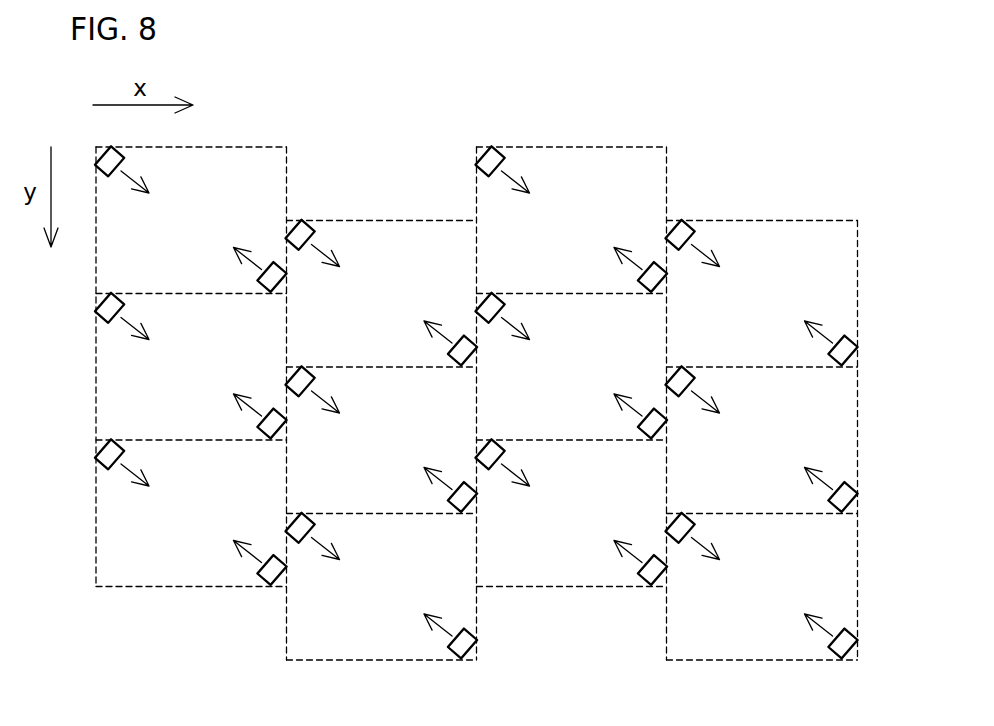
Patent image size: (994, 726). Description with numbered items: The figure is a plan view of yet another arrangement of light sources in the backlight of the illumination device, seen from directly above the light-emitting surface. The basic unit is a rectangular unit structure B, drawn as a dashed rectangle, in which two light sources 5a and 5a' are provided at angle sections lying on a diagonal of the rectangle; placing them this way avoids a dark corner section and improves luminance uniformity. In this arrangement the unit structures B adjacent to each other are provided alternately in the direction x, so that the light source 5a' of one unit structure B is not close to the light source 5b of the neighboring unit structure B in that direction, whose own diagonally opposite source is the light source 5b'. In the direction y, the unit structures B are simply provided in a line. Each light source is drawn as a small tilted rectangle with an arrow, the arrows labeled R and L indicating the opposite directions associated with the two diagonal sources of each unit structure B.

The light source 5a is at (113, 202).
The light source 5a' is at (253, 300).
The light source 5b is at (313, 219).
The light source 5b' is at (448, 368).
The unit structure B is at (258, 126).
The right direction arrow R is at (141, 174).
The left direction arrow L is at (248, 249).